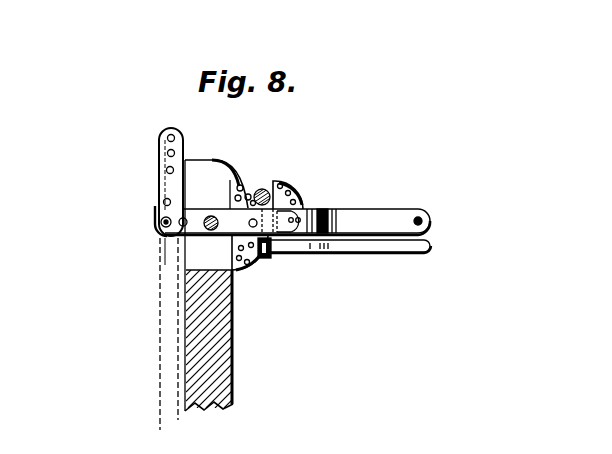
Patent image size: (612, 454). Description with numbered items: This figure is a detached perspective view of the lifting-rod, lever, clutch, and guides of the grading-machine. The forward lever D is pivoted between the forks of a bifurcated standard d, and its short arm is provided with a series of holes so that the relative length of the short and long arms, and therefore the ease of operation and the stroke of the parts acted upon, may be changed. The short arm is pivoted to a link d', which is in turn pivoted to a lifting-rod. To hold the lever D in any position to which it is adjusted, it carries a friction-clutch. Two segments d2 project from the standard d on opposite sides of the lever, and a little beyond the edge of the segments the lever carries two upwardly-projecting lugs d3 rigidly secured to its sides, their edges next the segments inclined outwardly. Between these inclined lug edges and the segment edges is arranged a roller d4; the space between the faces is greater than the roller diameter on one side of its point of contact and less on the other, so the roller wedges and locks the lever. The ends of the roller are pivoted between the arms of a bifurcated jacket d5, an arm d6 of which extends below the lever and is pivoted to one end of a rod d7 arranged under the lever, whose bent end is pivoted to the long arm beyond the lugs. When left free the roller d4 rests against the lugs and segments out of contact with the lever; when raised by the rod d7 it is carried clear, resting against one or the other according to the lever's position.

The link d' is at (152, 182).
The bifurcated standard d is at (208, 295).
The segments d2 is at (241, 201).
The upwardly-projecting lugs d3 is at (308, 208).
The roller d4 is at (284, 185).
The bifurcated jacket d5 is at (240, 246).
The arm d6 is at (268, 256).
The rod d7 is at (351, 258).
The forward lever D is at (297, 222).